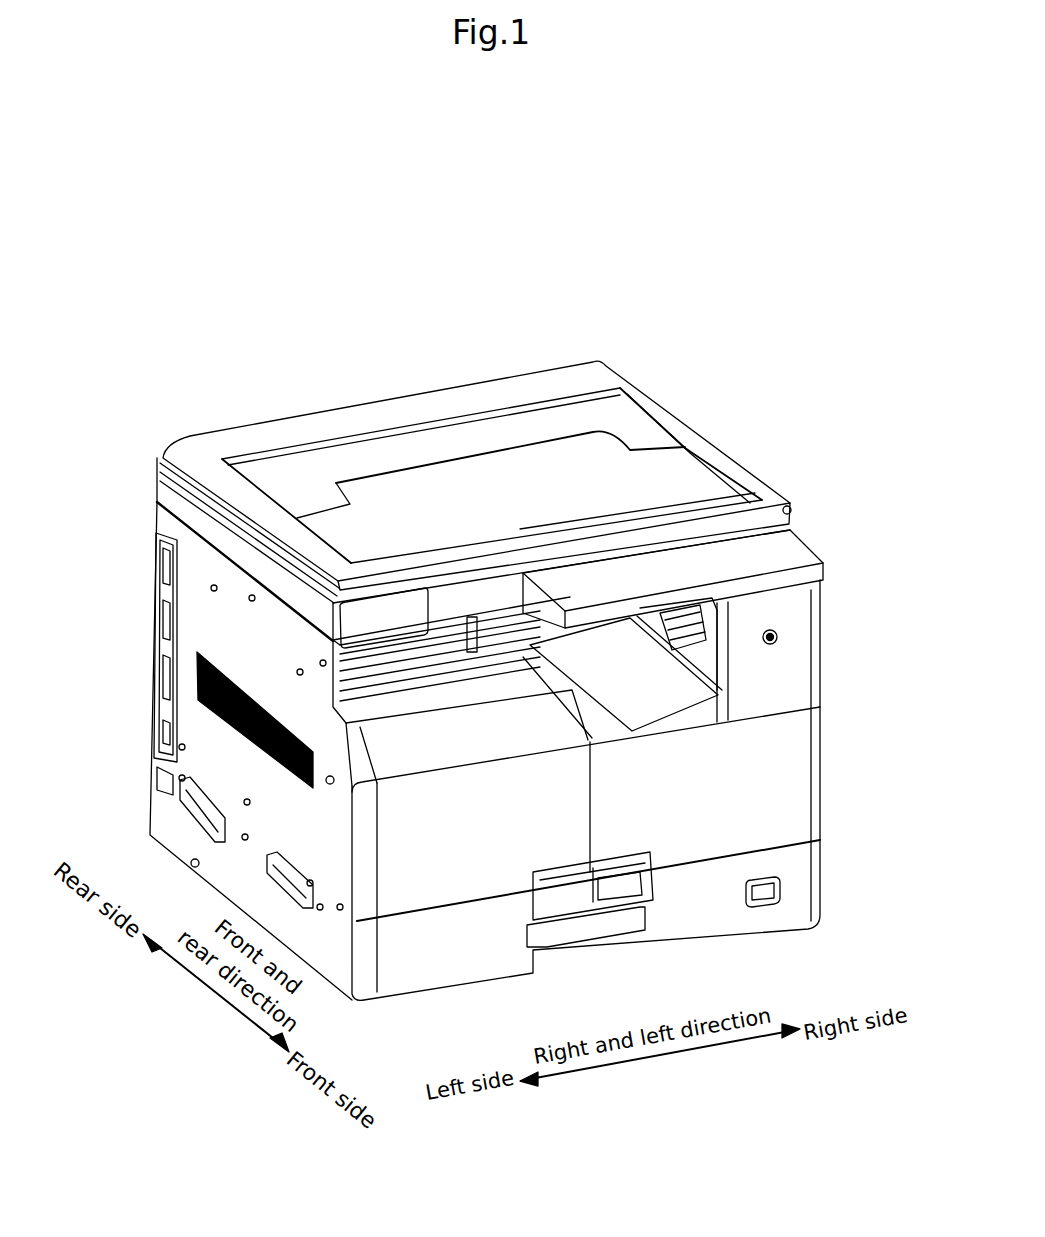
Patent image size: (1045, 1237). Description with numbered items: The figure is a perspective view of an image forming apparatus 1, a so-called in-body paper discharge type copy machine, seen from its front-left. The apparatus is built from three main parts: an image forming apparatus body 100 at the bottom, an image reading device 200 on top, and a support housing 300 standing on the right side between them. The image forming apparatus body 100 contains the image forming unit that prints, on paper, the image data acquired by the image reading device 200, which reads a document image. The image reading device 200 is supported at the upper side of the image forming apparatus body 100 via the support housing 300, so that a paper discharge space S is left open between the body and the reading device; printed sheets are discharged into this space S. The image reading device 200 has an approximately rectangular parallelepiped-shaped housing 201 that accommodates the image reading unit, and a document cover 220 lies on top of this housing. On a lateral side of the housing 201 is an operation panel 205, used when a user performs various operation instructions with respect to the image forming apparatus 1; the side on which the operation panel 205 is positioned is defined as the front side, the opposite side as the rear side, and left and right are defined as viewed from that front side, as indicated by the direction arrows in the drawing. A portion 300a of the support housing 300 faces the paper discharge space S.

The image forming apparatus 1 is at (148, 360).
The image forming apparatus body 100 is at (795, 810).
The image reading device 200 is at (152, 494).
The housing 201 is at (189, 513).
The operation panel 205 is at (793, 562).
The document cover 220 is at (360, 447).
The support housing 300 is at (790, 665).
The sheet discharge portion 300a is at (683, 613).
The paper discharge space S is at (648, 698).